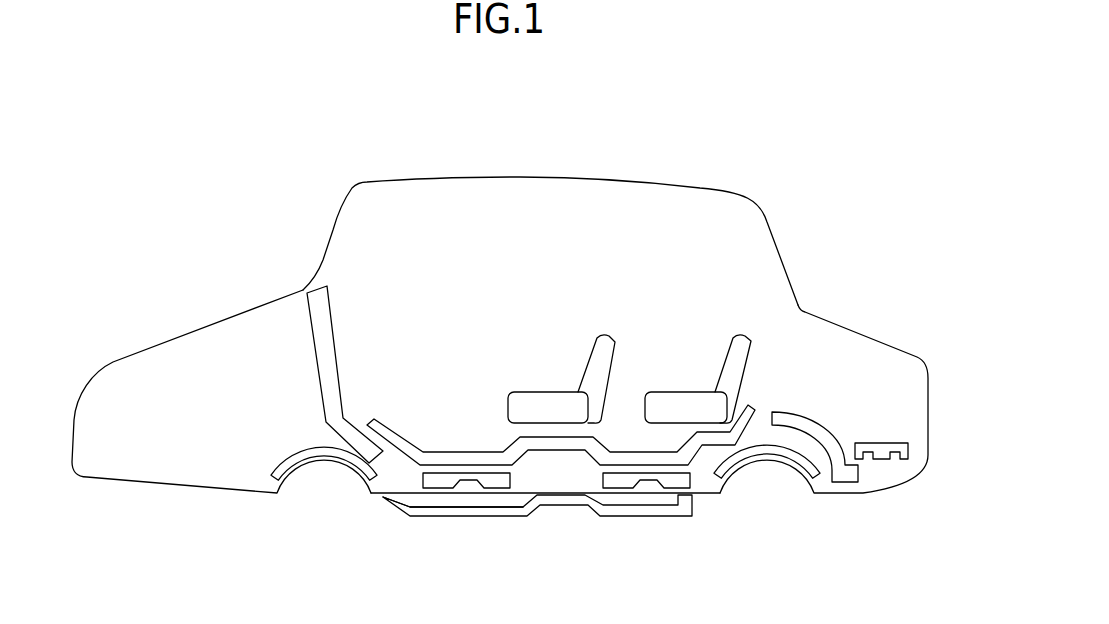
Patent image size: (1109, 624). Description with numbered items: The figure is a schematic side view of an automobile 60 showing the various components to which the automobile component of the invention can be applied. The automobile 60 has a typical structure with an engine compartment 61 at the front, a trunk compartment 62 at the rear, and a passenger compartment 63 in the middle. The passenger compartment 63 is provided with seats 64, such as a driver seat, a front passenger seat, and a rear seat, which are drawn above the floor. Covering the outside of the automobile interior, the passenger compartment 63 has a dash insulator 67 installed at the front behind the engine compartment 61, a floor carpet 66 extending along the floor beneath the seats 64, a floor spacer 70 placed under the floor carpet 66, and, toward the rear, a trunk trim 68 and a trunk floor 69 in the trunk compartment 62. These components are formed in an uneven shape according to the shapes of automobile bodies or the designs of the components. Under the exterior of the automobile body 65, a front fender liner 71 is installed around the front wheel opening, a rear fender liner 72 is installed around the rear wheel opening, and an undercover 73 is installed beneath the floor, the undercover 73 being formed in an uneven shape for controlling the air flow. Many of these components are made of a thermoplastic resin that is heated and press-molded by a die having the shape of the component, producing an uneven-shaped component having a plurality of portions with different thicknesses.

The automobile 60 is at (800, 178).
The engine compartment 61 is at (115, 366).
The trunk compartment 62 is at (919, 421).
The passenger compartment 63 is at (550, 192).
The seats 64 is at (606, 341).
The automobile body 65 is at (497, 493).
The floor carpet 66 is at (467, 458).
The dash insulator 67 is at (317, 313).
The trunk trim 68 is at (808, 424).
The trunk floor 69 is at (877, 443).
The floor spacer 70 is at (440, 480).
The front fender liner 71 is at (322, 457).
The rear fender liner 72 is at (767, 455).
The undercover 73 is at (437, 509).